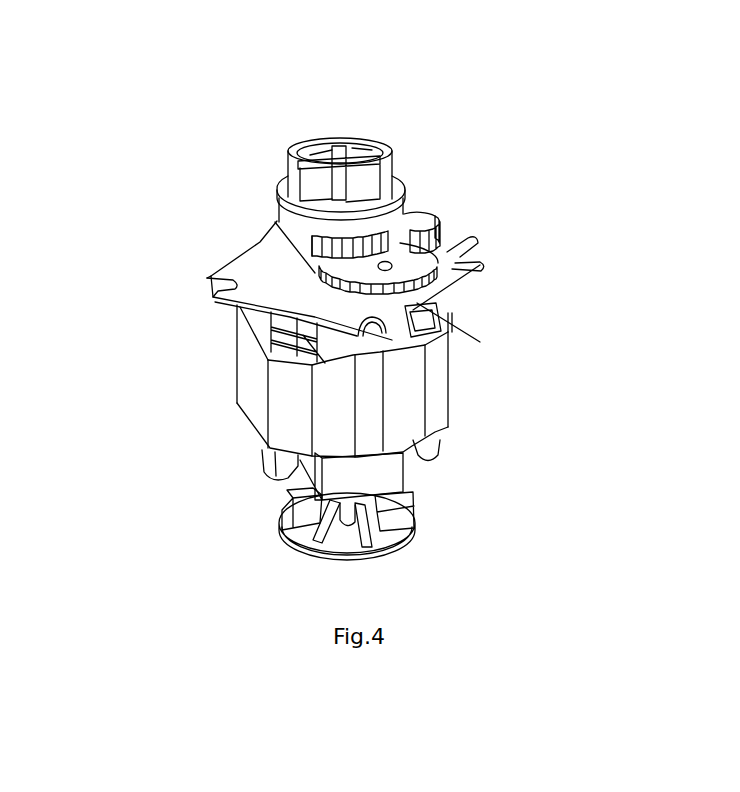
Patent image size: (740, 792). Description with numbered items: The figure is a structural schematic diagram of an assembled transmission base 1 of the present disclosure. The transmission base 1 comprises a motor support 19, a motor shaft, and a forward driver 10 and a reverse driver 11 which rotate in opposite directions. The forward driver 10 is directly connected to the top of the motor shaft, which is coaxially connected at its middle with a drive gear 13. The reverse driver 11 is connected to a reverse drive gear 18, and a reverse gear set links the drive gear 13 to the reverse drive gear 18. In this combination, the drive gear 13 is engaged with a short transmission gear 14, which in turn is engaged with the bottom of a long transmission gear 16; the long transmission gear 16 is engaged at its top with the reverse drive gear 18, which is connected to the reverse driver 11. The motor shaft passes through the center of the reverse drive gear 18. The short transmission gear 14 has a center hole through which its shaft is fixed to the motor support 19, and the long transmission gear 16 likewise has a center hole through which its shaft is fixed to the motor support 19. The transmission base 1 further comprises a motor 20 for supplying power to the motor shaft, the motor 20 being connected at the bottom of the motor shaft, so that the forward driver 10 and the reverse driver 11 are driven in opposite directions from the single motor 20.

The transmission base 1 is at (230, 374).
The forward driver 10 is at (365, 143).
The reverse driver 11 is at (400, 182).
The drive gear 13 is at (306, 266).
The short transmission gear 14 is at (430, 287).
The long transmission gear 16 is at (437, 231).
The reverse drive gear 18 is at (312, 247).
The motor support 19 is at (447, 330).
The motor 20 is at (433, 393).